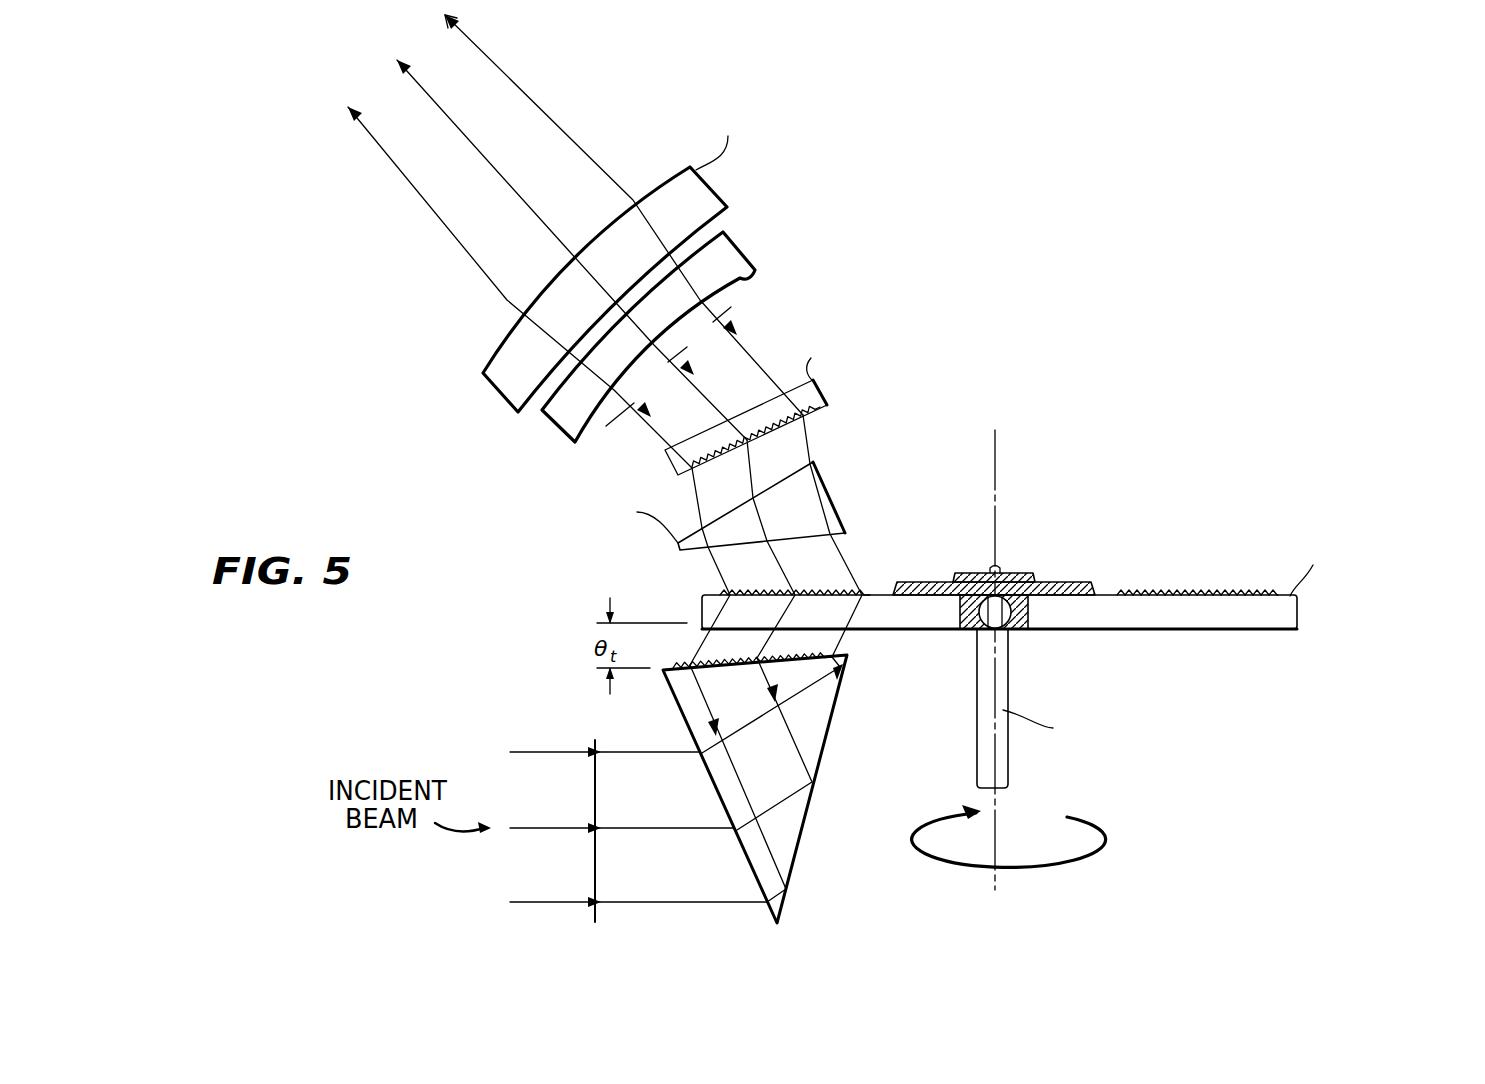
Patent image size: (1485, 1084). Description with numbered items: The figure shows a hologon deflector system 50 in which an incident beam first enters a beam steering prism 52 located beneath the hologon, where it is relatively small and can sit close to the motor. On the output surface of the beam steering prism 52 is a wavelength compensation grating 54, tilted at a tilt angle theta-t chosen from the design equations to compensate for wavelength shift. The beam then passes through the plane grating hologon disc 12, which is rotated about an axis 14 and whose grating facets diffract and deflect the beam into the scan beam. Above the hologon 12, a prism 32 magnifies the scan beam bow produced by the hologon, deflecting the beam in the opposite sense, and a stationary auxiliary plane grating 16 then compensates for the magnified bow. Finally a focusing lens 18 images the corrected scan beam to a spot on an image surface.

The plane grating hologon disc 12 is at (1297, 623).
The axis 14 is at (997, 500).
The auxiliary plane grating 16 is at (826, 392).
The focusing lens 18 is at (752, 201).
The prism 32 is at (838, 512).
The hologon deflector system 50 is at (1179, 440).
The beam steering prism 52 is at (813, 780).
The wavelength compensation grating 54 is at (810, 652).